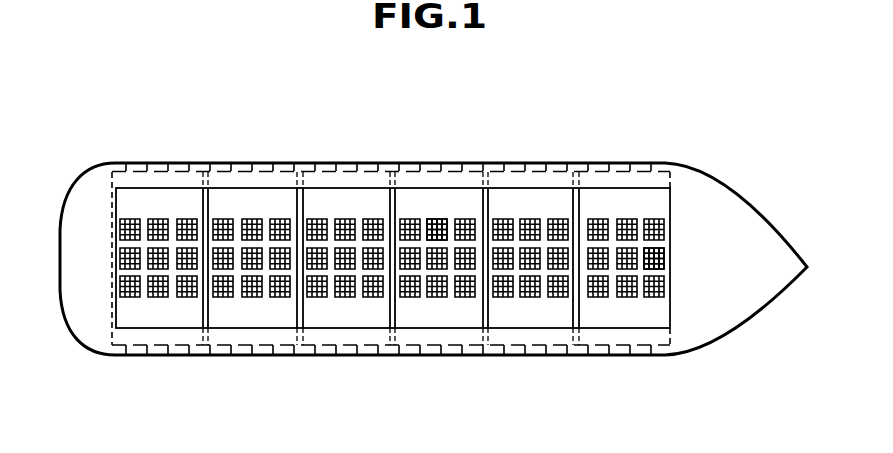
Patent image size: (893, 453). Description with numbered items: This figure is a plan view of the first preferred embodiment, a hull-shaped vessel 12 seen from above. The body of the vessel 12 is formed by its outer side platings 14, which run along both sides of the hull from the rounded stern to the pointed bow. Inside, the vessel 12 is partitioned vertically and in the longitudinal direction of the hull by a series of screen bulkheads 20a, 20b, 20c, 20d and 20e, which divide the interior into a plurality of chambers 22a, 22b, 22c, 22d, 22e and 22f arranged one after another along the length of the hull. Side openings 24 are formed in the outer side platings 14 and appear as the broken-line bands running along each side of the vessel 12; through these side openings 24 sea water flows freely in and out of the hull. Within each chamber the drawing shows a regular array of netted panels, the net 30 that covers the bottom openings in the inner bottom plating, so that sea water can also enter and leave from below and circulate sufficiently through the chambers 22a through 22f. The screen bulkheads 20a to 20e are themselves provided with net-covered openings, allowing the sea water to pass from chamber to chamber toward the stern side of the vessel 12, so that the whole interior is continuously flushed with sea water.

The hull-shaped vessel 12 is at (685, 167).
The outer side platings 14 is at (540, 165).
The screen bulkhead 20a is at (579, 213).
The screen bulkhead 20b is at (488, 205).
The screen bulkhead 20c is at (395, 205).
The screen bulkhead 20d is at (303, 205).
The screen bulkhead 20e is at (208, 204).
The chamber 22a is at (626, 275).
The chamber 22b is at (530, 274).
The chamber 22c is at (437, 274).
The chamber 22d is at (345, 274).
The chamber 22e is at (251, 273).
The chamber 22f is at (158, 273).
The side openings 24 is at (183, 170).
The net 30 is at (438, 226).